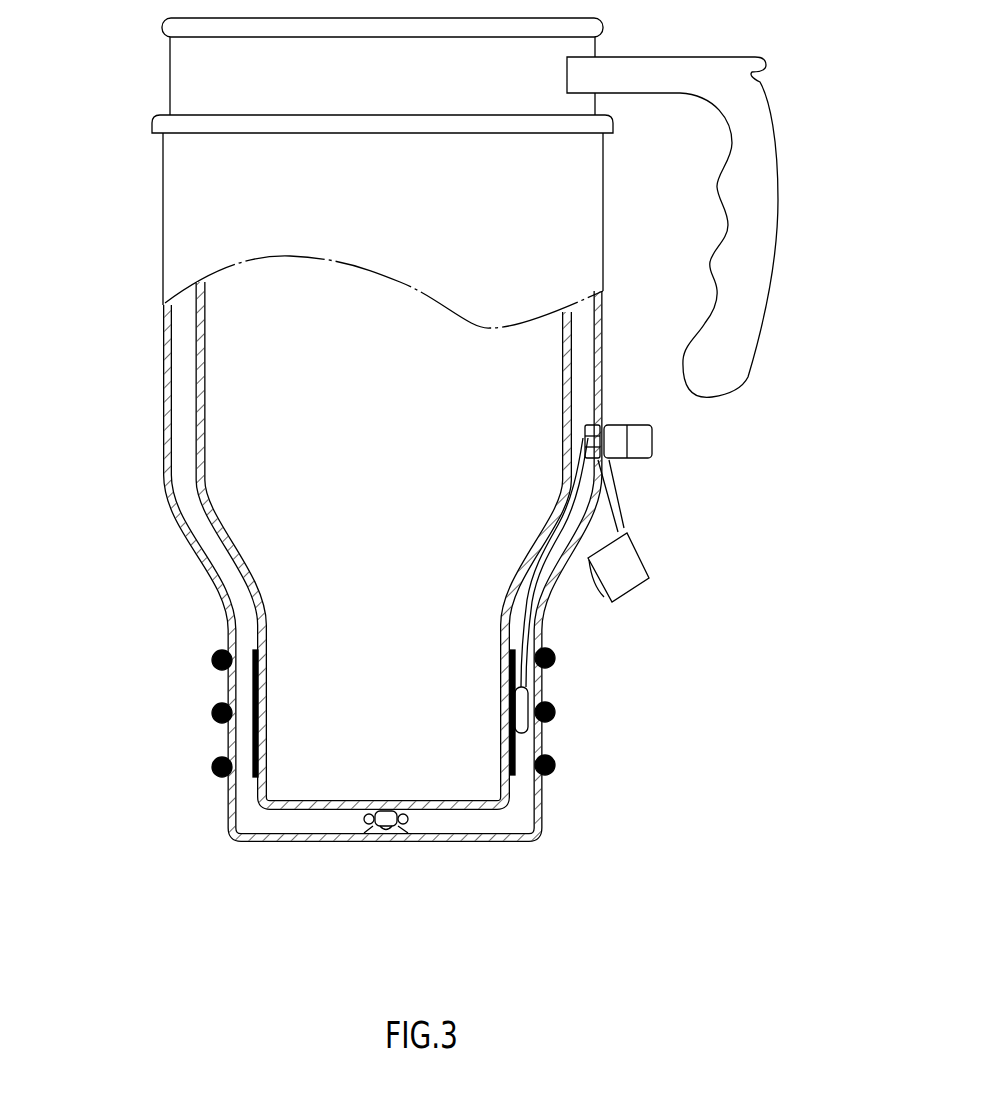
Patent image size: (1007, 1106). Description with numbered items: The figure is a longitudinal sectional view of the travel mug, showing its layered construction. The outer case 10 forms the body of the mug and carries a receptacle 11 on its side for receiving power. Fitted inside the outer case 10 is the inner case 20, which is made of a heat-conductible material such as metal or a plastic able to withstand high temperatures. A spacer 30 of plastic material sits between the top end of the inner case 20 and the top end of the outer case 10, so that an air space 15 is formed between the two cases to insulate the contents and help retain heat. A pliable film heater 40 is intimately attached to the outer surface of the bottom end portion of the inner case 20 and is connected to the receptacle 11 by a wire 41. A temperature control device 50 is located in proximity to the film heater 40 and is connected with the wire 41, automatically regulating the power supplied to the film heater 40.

The outer case 10 is at (163, 452).
The receptacle 11 is at (638, 441).
The air space 15 is at (186, 403).
The inner case 20 is at (197, 349).
The spacer 30 is at (176, 63).
The pliable film heater 40 is at (253, 730).
The wire 41 is at (552, 596).
The temperature control device 50 is at (518, 720).